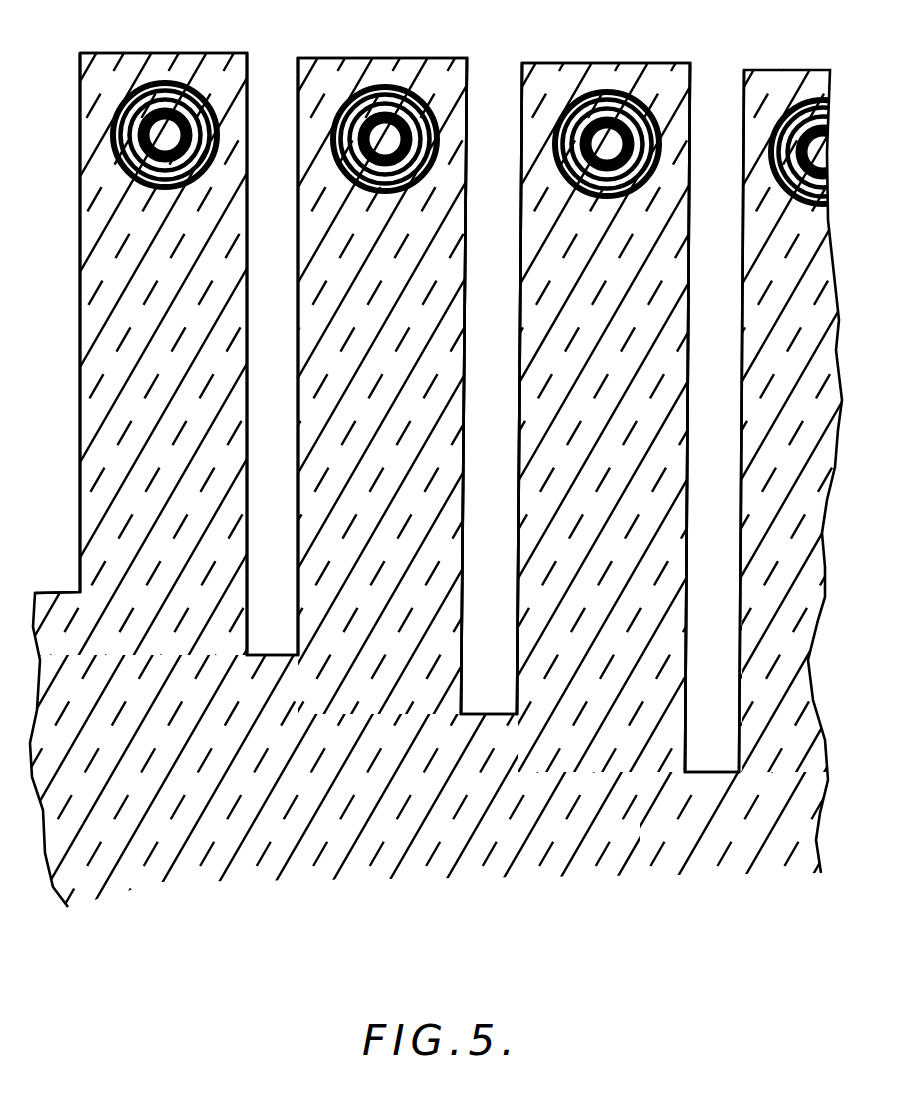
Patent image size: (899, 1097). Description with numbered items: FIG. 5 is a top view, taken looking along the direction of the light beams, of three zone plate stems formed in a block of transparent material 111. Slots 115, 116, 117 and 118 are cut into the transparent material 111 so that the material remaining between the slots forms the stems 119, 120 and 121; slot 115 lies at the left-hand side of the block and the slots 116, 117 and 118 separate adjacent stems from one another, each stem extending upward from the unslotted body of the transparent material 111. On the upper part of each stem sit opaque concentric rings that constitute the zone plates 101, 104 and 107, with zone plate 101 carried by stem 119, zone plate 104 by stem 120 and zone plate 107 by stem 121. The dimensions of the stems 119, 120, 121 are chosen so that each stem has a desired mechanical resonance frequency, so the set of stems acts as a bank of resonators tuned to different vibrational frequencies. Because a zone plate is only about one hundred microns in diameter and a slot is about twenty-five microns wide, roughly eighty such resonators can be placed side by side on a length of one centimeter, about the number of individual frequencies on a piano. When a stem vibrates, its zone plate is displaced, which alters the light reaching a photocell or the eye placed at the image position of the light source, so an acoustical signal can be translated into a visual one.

The zone plate 101 is at (169, 84).
The zone plate 104 is at (390, 88).
The zone plate 107 is at (618, 85).
The transparent material 111 is at (427, 873).
The slot 115 is at (62, 323).
The slot 116 is at (272, 354).
The slot 117 is at (491, 386).
The slot 118 is at (714, 417).
The stem 119 is at (163, 354).
The stem 120 is at (382, 386).
The stem 121 is at (603, 417).